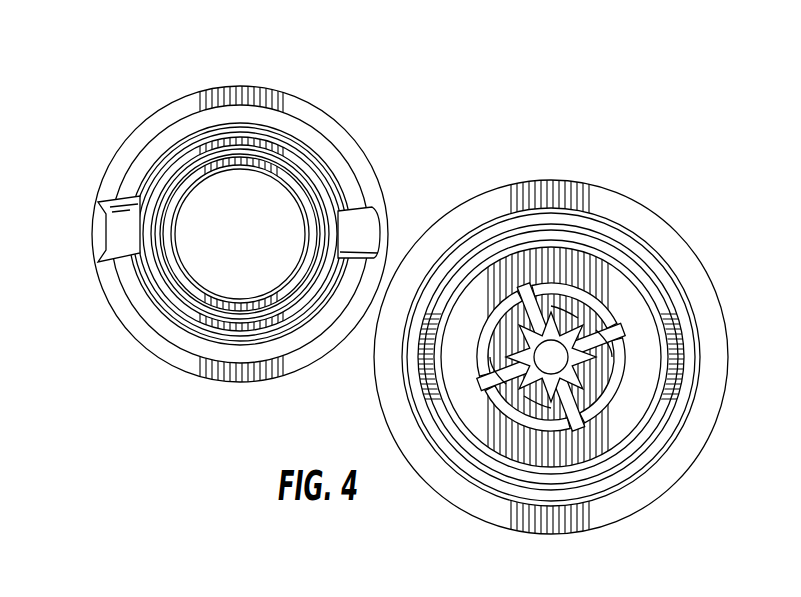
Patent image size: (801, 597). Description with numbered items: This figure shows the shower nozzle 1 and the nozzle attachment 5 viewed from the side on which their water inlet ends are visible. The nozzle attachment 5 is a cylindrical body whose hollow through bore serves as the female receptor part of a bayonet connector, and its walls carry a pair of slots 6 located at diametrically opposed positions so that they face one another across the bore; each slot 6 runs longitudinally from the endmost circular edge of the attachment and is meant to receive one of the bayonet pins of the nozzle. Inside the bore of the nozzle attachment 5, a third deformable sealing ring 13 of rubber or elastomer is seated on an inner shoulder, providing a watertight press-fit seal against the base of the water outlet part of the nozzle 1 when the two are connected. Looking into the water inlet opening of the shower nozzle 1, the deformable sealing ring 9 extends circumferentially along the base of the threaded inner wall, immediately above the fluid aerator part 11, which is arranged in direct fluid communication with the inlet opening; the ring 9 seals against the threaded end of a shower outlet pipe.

The shower nozzle 1 is at (618, 188).
The nozzle attachment 5 is at (285, 88).
The slots 6 is at (118, 246).
The deformable sealing ring 9 is at (657, 312).
The fluid aerator part 11 is at (572, 453).
The third deformable sealing ring 13 is at (198, 161).